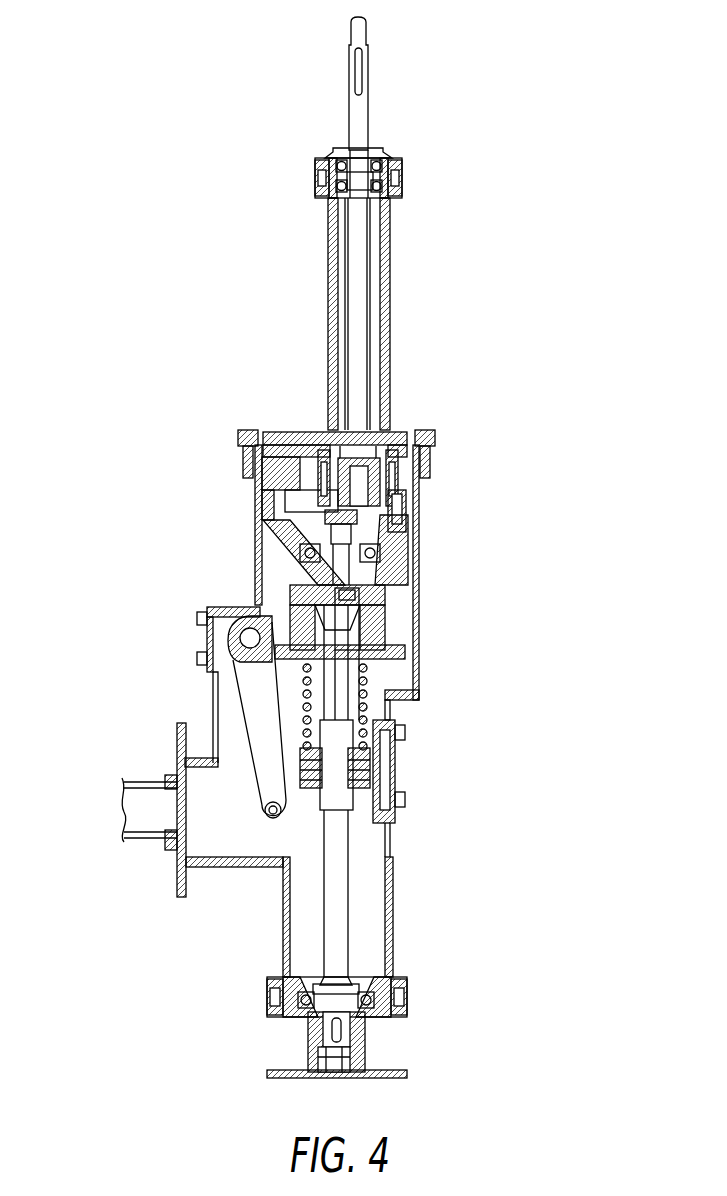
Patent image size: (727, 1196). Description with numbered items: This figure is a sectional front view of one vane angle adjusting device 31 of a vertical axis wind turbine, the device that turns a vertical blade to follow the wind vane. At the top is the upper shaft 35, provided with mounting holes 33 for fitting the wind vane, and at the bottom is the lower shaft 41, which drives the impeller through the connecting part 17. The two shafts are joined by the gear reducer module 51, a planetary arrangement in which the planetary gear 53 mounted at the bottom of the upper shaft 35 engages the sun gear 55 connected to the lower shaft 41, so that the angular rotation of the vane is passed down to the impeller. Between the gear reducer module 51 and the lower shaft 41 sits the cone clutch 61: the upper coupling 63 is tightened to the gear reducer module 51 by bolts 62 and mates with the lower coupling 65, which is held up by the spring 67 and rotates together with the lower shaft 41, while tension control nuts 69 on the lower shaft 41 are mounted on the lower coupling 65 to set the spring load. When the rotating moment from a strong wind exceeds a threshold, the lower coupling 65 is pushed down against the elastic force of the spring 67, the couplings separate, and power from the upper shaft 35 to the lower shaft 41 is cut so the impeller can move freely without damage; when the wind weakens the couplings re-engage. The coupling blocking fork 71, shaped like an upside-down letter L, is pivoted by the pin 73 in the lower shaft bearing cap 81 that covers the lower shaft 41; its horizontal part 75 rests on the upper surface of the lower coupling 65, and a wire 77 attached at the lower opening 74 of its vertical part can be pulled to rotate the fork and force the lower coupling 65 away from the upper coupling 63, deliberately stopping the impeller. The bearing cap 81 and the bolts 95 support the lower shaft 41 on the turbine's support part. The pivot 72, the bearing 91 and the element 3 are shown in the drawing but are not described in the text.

The vane angle adjusting device 31 is at (305, 322).
The mounting holes 33 is at (358, 64).
The upper shaft 35 is at (360, 285).
The gear reducer module 51 is at (330, 525).
The bolts 95 is at (249, 428).
The lower shaft bearing cap 81 is at (256, 495).
The upper coupling 63 is at (292, 528).
The planetary gear 53 is at (416, 490).
The sun gear 55 is at (418, 503).
The bolts 62 is at (420, 530).
The bearing 91 is at (262, 550).
The cone clutch 61 is at (340, 609).
The lower coupling 65 is at (300, 613).
The horizontal part 75 is at (342, 640).
The spring 67 is at (392, 700).
The tension control nuts 69 is at (385, 762).
The lower shaft 41 is at (340, 868).
The coupling blocking fork 71 is at (226, 690).
The pivot 72 is at (238, 633).
The pin 73 is at (262, 737).
The lower opening 74 is at (268, 828).
The wire 77 is at (107, 844).
The pipe wall 3 is at (143, 838).
The connecting part 17 is at (362, 1040).